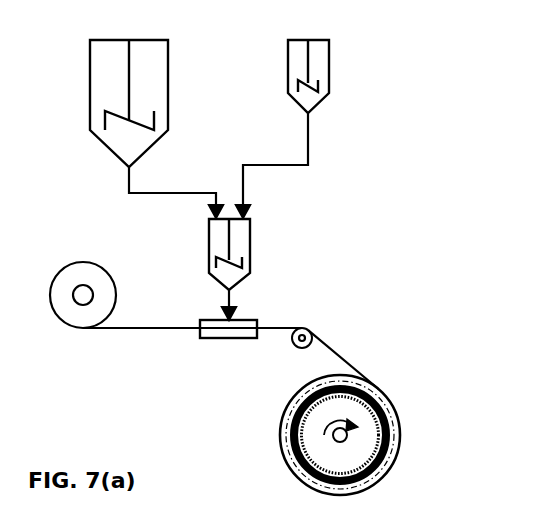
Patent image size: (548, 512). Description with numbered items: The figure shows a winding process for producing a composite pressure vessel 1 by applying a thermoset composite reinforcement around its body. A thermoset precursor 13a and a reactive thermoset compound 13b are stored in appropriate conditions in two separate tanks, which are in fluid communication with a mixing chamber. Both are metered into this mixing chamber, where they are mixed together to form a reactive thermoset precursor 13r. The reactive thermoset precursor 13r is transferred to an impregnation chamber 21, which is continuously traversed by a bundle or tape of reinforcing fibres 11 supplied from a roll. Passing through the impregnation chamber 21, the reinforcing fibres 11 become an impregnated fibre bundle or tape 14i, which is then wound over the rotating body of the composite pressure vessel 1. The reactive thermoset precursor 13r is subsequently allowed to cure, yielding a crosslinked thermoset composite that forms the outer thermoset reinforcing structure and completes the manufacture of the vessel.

The composite pressure vessel 1 is at (396, 378).
The bundle or tape of reinforcing fibres 11 is at (163, 333).
The thermoset precursor 13a is at (160, 65).
The reactive thermoset compound 13b is at (317, 57).
The reactive thermoset precursor 13r is at (209, 255).
The impregnated fibre bundle/tape 14i is at (274, 321).
The impregnation chamber 21 is at (228, 340).